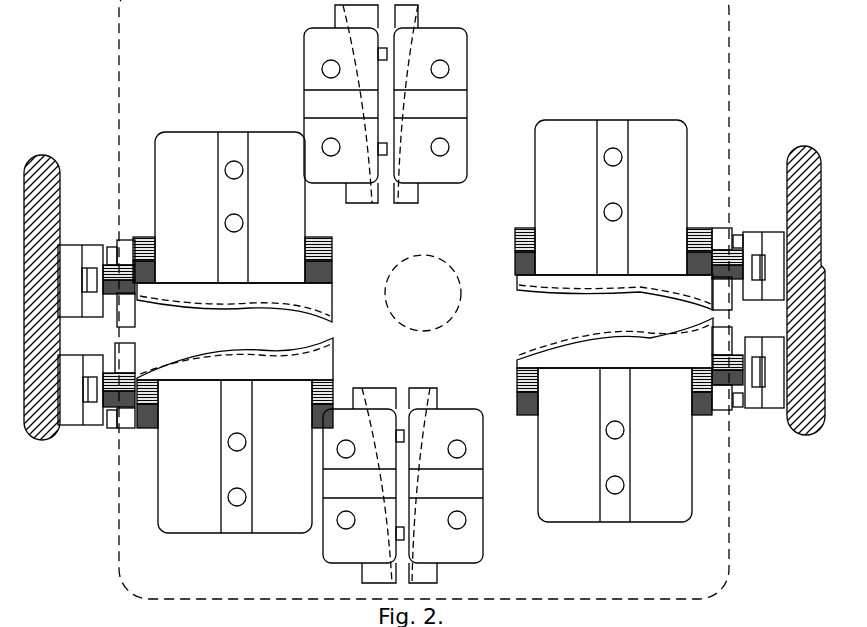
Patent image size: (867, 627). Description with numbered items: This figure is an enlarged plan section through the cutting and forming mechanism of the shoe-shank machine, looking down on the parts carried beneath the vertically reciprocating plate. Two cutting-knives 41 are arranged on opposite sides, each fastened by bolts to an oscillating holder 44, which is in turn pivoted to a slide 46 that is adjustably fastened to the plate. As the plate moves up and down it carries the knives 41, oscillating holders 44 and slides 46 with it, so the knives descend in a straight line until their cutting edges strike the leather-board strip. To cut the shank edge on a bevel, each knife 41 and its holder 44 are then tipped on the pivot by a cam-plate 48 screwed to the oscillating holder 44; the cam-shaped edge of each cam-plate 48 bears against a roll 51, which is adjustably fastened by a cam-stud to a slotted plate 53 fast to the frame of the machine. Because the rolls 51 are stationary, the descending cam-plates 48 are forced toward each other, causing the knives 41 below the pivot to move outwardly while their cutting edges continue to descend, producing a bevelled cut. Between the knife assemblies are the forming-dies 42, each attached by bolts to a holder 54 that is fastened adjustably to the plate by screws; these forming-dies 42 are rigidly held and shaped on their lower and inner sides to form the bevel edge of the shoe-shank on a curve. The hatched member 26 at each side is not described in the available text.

The wheel rim 26 is at (50, 193).
The cutting-knife 41 is at (425, 327).
The forming-die 42 is at (426, 386).
The oscillating holder 44 is at (330, 262).
The slide 46 is at (423, 326).
The cam-plate 48 is at (125, 250).
The roll 51 is at (108, 275).
The slotted plate 53 is at (421, 328).
The holder 54 is at (401, 484).